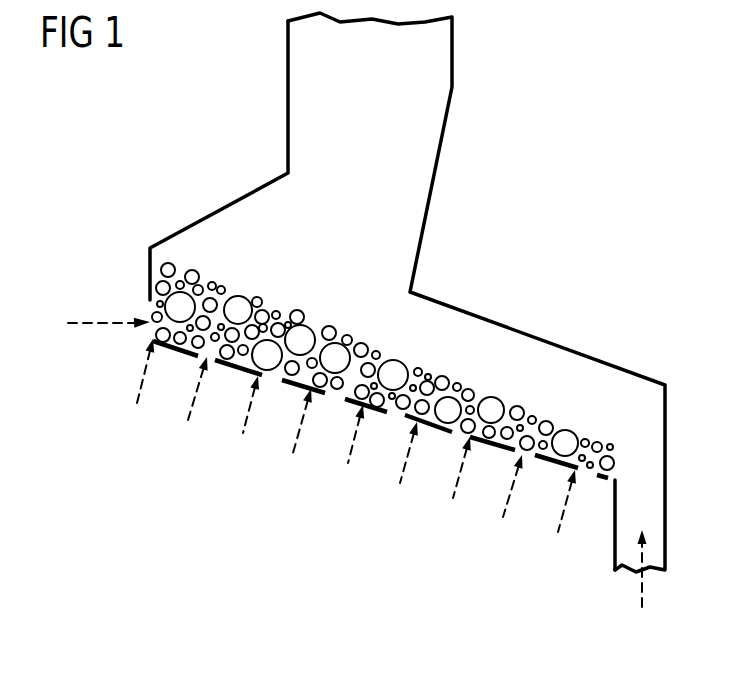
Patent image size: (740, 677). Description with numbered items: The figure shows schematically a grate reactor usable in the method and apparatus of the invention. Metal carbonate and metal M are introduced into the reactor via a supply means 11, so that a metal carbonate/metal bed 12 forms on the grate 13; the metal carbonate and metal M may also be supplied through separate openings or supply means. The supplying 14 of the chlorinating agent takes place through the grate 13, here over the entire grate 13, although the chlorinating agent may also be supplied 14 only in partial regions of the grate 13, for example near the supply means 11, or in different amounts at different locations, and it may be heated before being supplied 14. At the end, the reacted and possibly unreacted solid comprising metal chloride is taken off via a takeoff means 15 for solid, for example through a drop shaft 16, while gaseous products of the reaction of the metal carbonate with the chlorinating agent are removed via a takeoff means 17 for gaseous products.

The supply means 11 is at (95, 326).
The metal carbonate/metal bed 12 is at (286, 295).
The grate 13 is at (208, 360).
The supplying of the chlorinating agent 14 is at (198, 385).
The takeoff means for solid 15 is at (618, 593).
The drop shaft 16 is at (643, 588).
The takeoff means for gaseous products 17 is at (384, 71).